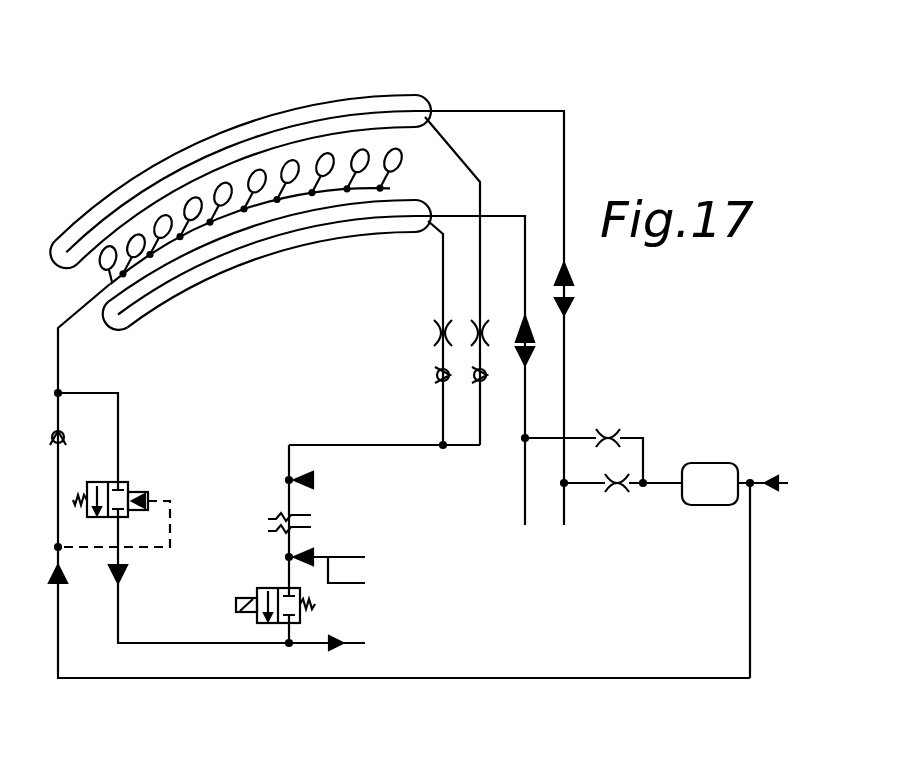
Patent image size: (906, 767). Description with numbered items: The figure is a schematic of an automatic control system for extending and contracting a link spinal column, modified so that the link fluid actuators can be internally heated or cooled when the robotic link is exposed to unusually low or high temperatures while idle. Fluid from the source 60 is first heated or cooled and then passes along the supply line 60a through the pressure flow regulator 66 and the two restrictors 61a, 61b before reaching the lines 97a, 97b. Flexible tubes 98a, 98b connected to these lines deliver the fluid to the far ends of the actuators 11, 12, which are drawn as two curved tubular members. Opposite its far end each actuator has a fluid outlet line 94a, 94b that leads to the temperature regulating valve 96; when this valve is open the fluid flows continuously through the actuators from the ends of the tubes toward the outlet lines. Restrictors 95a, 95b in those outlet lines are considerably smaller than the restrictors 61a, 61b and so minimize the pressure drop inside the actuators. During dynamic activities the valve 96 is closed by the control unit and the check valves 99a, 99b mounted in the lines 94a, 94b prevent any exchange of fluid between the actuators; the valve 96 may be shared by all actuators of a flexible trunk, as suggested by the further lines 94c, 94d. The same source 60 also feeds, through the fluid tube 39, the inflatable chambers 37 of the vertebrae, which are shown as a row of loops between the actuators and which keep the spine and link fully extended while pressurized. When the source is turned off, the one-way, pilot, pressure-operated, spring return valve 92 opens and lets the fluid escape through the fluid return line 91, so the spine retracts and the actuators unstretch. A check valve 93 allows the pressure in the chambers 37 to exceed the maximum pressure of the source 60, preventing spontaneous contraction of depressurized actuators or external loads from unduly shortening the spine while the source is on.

The actuator 11 is at (380, 102).
The actuator 12 is at (177, 280).
The inflatable chambers 37 is at (227, 196).
The fluid tube 39 is at (75, 317).
The flexible tube 98a is at (65, 247).
The flexible tube 98b is at (128, 302).
The line 97a is at (435, 110).
The line 97b is at (505, 213).
The fluid outlet line 94a is at (463, 162).
The fluid outlet line 94b is at (443, 262).
The line 94c is at (313, 480).
The line 94d is at (328, 480).
The restrictor 95a is at (474, 322).
The restrictor 95b is at (434, 337).
The check valve 99a is at (478, 384).
The check valve 99b is at (437, 375).
The check valve 93 is at (64, 432).
The one-way, pilot, pressure-operated, spring return valve 92 is at (128, 482).
The temperature regulating valve 96 is at (300, 617).
The fluid return line 91 is at (344, 645).
The restrictor 61a is at (621, 476).
The restrictor 61b is at (606, 436).
The pressure flow regulator 66 is at (722, 463).
The fluid pressure source 60 is at (785, 482).
The supply line 60a is at (667, 483).